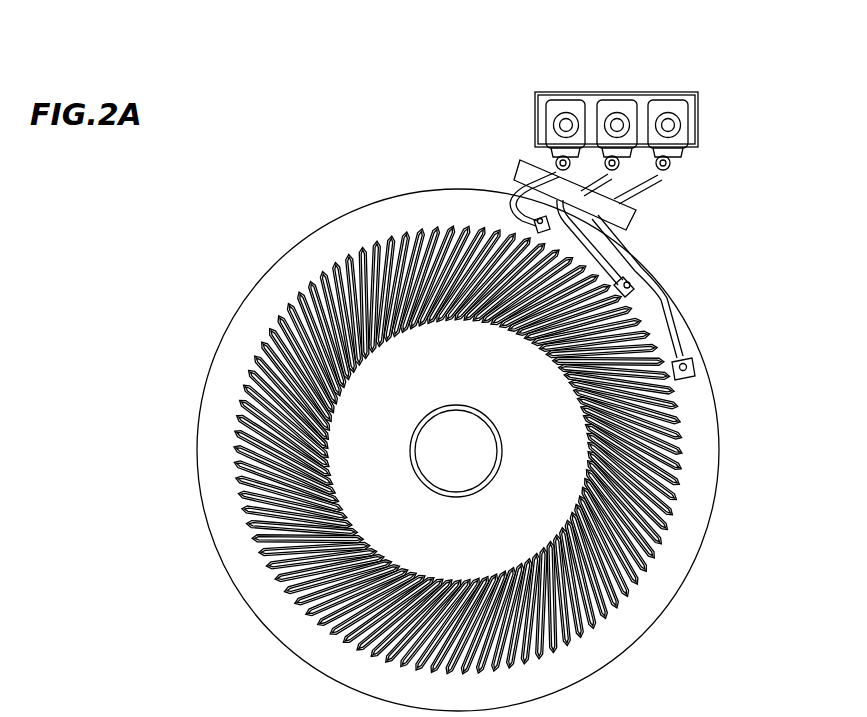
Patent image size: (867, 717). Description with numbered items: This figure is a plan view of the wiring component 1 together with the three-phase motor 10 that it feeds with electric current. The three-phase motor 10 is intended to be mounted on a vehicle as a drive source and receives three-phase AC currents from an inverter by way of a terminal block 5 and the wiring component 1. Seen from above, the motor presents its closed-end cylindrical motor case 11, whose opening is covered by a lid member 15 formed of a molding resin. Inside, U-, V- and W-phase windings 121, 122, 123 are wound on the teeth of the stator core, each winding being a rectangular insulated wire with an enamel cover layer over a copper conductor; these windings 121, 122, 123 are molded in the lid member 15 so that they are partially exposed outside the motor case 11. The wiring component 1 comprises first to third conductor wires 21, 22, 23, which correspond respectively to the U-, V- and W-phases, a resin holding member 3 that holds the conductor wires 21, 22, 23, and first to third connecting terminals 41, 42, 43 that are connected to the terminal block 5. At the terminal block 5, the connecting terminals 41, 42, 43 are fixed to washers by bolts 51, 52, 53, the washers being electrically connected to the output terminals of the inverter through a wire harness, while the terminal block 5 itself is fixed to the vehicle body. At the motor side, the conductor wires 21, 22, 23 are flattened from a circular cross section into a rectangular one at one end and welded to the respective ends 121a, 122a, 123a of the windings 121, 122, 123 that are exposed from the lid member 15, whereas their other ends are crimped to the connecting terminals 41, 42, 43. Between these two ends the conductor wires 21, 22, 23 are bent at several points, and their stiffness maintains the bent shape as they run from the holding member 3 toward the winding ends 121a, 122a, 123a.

The wiring component 1 is at (508, 153).
The resin holding member 3 is at (532, 162).
The terminal block 5 is at (698, 120).
The three-phase motor 10 is at (431, 448).
The motor case 11 is at (233, 312).
The lid member 15 is at (404, 432).
The first conductor wire 21 is at (647, 170).
The second conductor wire 22 is at (627, 190).
The third conductor wire 23 is at (518, 188).
The first connecting terminal 41 is at (672, 114).
The second connecting terminal 42 is at (621, 114).
The third connecting terminal 43 is at (571, 114).
The bolt 51 is at (683, 97).
The bolt 52 is at (631, 97).
The bolt 53 is at (583, 97).
The U-phase winding 121 is at (237, 418).
The V-phase winding 122 is at (232, 448).
The W-phase winding 123 is at (243, 525).
The end of U-phase winding 121a is at (696, 373).
The end of V-phase winding 122a is at (636, 289).
The end of W-phase winding 123a is at (549, 231).